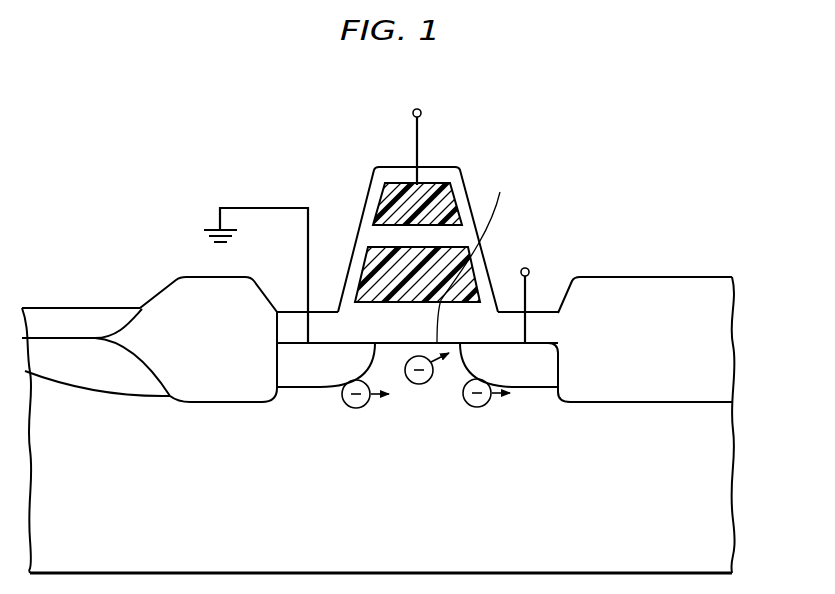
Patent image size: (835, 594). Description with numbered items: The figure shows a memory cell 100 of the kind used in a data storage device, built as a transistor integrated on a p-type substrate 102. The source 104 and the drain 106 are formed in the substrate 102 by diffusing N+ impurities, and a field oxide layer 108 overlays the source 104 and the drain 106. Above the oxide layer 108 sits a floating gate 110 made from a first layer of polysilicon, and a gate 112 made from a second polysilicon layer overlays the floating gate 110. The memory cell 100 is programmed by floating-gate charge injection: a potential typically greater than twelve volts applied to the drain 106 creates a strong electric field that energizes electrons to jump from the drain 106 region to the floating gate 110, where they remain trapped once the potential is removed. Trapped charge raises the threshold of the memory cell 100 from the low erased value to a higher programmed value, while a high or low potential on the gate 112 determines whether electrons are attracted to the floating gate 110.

The memory cell 100 is at (170, 151).
The p-type substrate 102 is at (697, 492).
The source 104 is at (293, 389).
The drain 106 is at (531, 390).
The field oxide layer 108 is at (707, 332).
The floating gate 110 is at (360, 246).
The gate 112 is at (382, 196).